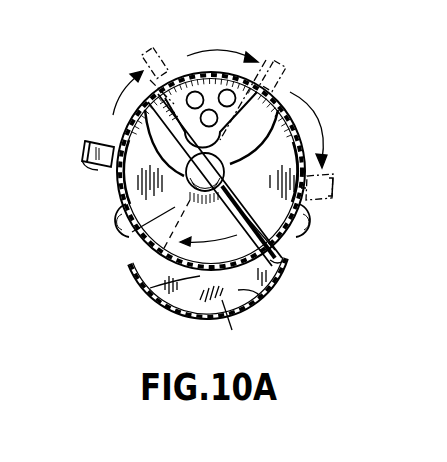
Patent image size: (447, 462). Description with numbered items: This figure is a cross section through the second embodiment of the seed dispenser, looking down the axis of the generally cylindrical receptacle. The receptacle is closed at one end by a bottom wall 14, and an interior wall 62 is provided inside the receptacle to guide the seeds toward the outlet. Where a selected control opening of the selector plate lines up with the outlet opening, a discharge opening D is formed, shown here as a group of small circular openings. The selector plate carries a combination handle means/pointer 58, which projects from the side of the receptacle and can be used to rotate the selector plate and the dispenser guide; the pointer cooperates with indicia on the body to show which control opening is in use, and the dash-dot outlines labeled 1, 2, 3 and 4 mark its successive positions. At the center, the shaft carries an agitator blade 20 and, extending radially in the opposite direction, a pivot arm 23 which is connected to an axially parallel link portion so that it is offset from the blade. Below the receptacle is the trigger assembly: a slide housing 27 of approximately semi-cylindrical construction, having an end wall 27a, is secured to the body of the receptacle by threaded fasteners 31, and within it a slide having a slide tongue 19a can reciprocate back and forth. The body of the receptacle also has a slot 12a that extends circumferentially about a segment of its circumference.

The stop member position 1 is at (90, 154).
The second stop position 2 is at (155, 59).
The third stop position 3 is at (274, 66).
The fourth stop position 4 is at (325, 188).
The slot 12a is at (257, 299).
The bottom wall 14 is at (130, 190).
The slide tongue 19a is at (175, 279).
The agitator blade 20 is at (125, 138).
The pivot arm 23 is at (278, 271).
The slide housing 27 is at (174, 319).
The end wall 27a is at (230, 329).
The threaded fasteners 31 is at (105, 228).
The handle means/pointer 58 is at (85, 163).
The interior wall 62 is at (362, 87).
The discharge opening D is at (205, 93).